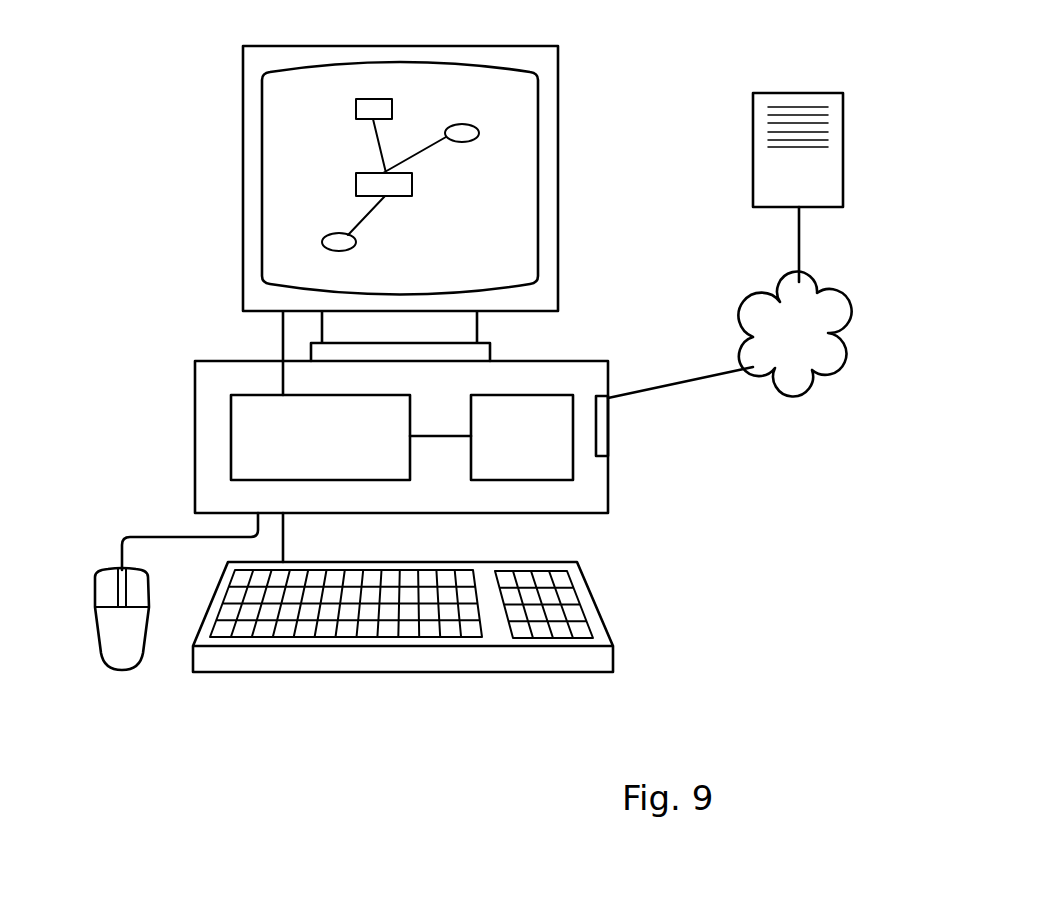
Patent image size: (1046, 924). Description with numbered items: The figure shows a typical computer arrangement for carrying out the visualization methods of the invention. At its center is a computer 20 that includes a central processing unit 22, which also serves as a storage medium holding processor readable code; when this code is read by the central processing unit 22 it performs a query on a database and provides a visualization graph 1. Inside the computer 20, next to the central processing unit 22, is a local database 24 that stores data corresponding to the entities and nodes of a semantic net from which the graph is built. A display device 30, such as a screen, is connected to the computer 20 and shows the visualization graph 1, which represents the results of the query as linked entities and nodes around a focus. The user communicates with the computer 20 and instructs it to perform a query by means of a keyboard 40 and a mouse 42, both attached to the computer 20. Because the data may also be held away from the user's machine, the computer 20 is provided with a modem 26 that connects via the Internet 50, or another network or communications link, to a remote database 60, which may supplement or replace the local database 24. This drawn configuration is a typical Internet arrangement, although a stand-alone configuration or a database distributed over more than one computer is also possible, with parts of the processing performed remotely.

The visualization graph 1 is at (262, 157).
The computer 20 is at (195, 382).
The central processing unit 22 is at (231, 450).
The database 24 is at (577, 473).
The modem 26 is at (608, 443).
The display device 30 is at (243, 85).
The keyboard 40 is at (600, 606).
The mouse 42 is at (94, 592).
The Internet 50 is at (847, 312).
The remote database 60 is at (843, 182).